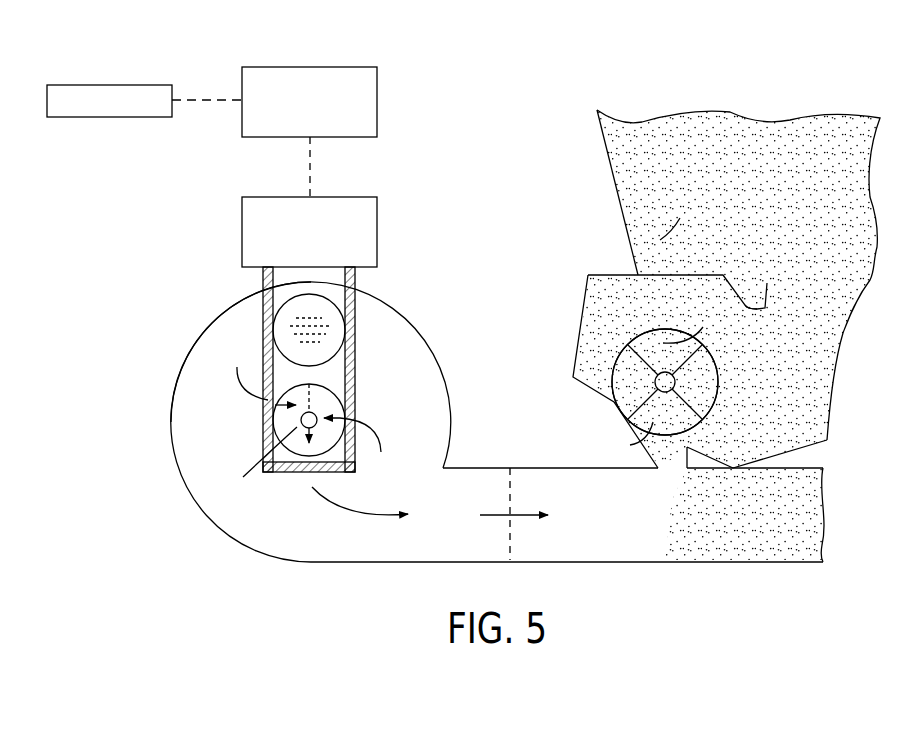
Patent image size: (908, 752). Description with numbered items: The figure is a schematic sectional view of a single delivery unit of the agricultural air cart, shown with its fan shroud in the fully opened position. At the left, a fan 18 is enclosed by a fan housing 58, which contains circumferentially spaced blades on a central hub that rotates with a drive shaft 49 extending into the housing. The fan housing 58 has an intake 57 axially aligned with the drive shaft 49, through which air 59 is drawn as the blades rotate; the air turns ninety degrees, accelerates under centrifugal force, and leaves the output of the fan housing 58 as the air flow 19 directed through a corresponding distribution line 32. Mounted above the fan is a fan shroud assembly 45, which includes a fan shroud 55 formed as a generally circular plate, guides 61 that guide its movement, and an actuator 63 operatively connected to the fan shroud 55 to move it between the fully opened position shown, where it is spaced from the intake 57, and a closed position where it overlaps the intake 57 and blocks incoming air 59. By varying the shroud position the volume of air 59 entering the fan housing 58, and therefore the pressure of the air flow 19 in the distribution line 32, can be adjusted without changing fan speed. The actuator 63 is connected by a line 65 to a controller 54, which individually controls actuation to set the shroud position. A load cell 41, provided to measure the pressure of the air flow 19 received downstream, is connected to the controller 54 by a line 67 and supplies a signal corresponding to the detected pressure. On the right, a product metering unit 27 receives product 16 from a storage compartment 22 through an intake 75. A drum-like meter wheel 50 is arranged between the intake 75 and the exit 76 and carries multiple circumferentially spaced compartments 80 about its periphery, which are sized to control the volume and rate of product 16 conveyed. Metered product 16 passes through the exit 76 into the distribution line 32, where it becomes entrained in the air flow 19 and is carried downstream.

The load cell 41 is at (108, 85).
The line 67 is at (212, 100).
The controller 54 is at (305, 67).
The line 65 is at (312, 170).
The actuator 63 is at (378, 234).
The fan shroud assembly 45 is at (216, 232).
The fan 18 is at (148, 288).
The fan housing 58 is at (171, 448).
The fan shroud 55 is at (327, 310).
The drive shaft 49 is at (327, 400).
The guide 61 is at (260, 412).
The intake 57 is at (268, 436).
The air 59 is at (383, 422).
The air flow 19 is at (521, 518).
The storage compartment 22 is at (578, 157).
The product 16 is at (660, 240).
The product metering unit 27 is at (836, 390).
The intake 75 is at (765, 301).
The compartment 80 is at (672, 331).
The meter wheel 50 is at (703, 425).
The exit 76 is at (681, 480).
The distribution line 32 is at (808, 545).